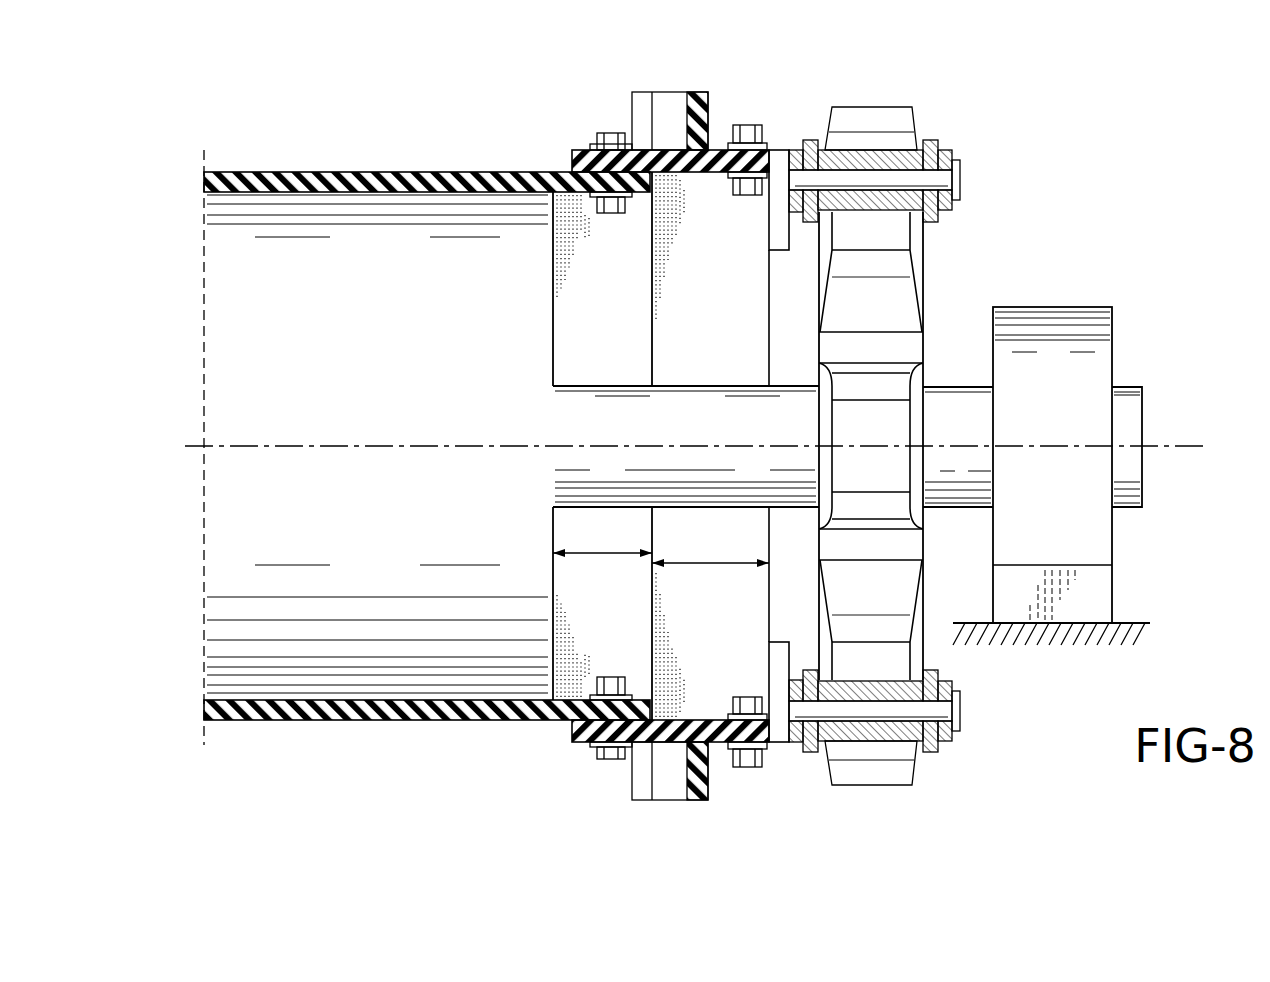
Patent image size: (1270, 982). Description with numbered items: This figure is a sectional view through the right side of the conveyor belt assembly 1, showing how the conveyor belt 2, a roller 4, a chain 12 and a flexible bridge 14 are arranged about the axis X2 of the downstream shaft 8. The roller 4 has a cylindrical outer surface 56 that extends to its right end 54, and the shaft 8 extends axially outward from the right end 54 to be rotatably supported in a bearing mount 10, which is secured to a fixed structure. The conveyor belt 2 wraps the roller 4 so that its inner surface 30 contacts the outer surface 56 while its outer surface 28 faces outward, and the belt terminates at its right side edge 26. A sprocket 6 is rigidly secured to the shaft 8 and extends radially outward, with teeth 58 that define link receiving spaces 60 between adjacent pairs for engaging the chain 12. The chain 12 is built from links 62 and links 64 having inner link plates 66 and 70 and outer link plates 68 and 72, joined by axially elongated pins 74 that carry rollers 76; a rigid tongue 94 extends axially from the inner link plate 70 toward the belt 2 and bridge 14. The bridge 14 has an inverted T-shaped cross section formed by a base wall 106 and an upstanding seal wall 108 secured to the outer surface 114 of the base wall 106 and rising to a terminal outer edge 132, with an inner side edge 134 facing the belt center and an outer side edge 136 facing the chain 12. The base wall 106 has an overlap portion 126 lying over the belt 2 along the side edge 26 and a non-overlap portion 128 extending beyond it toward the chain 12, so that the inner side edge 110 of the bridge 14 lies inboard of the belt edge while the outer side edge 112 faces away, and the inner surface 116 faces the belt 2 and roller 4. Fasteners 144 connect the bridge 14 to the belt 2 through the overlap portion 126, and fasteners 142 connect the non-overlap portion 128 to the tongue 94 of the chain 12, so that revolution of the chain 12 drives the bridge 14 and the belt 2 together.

The conveyor belt assembly 1 is at (1138, 147).
The conveyor belt 2 is at (334, 163).
The roller 4 is at (188, 447).
The cylindrical outer surface 56 is at (250, 326).
The outer surface 28 is at (405, 170).
The inner surface 30 is at (378, 194).
The right end 54 is at (553, 345).
The right side edge 26 is at (652, 343).
The inner surface 116 is at (737, 295).
The overlap portion 126 is at (596, 552).
The non-overlap portion 128 is at (706, 562).
The base wall 106 is at (588, 454).
The inner side edge 110 is at (562, 734).
The inner side edge 134 is at (626, 114).
The outer side edge 136 is at (714, 114).
The seal wall 108 is at (610, 792).
The outer edge 132 is at (648, 806).
The outer surface 114 is at (586, 745).
The fastener 144 is at (610, 132).
The fastener 142 is at (759, 125).
The tongue 94 is at (778, 150).
The outer side edge 112 is at (771, 312).
The flexible bridge 14 is at (772, 603).
The inner link plate 66 is at (796, 148).
The inner link plate 70 is at (793, 205).
The link 62 is at (942, 454).
The outer link plate 72 is at (966, 207).
The chain 12 is at (966, 721).
The roller 76 is at (893, 155).
The link 64 is at (994, 446).
The outer link plate 68 is at (947, 146).
The pin 74 is at (870, 177).
The sprocket 6 is at (922, 439).
The tooth 58 is at (889, 100).
The link receiving space 60 is at (888, 340).
The shaft 8 is at (1127, 386).
The bearing mount 10 is at (1098, 302).
The axis X2 is at (1195, 446).